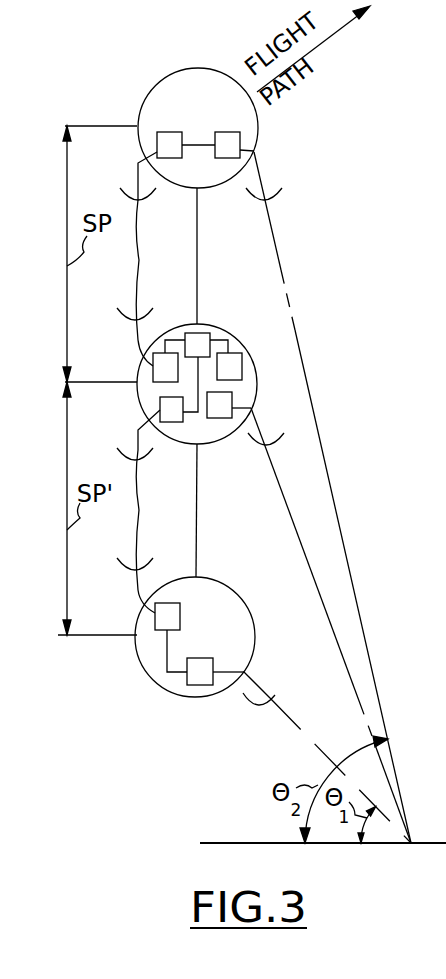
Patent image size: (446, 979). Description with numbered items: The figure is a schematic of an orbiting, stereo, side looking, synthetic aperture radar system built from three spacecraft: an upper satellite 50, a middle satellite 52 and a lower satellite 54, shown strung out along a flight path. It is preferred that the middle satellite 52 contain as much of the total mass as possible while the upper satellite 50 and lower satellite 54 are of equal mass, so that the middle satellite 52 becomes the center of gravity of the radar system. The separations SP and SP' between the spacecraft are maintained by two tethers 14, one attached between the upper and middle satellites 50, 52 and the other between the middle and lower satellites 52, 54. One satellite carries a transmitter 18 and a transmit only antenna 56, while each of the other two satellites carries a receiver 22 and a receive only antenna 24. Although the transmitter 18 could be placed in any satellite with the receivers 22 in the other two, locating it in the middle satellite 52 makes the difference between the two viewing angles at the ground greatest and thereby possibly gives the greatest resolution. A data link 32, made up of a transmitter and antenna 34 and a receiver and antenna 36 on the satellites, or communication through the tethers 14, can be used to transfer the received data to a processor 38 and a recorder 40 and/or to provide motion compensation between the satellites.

The tether 14 is at (198, 265).
The transmitter 18 is at (243, 364).
The receiver 22 is at (241, 140).
The receive only antenna 24 is at (263, 186).
The data link 32 is at (137, 253).
The transmitter and antenna 34 is at (157, 140).
The receiver and antenna 36 is at (153, 365).
The processor 38 is at (203, 332).
The recorder 40 is at (245, 355).
The upper satellite 50 is at (216, 68).
The middle satellite 52 is at (240, 337).
The lower satellite 54 is at (234, 585).
The transmit only antenna 56 is at (253, 413).